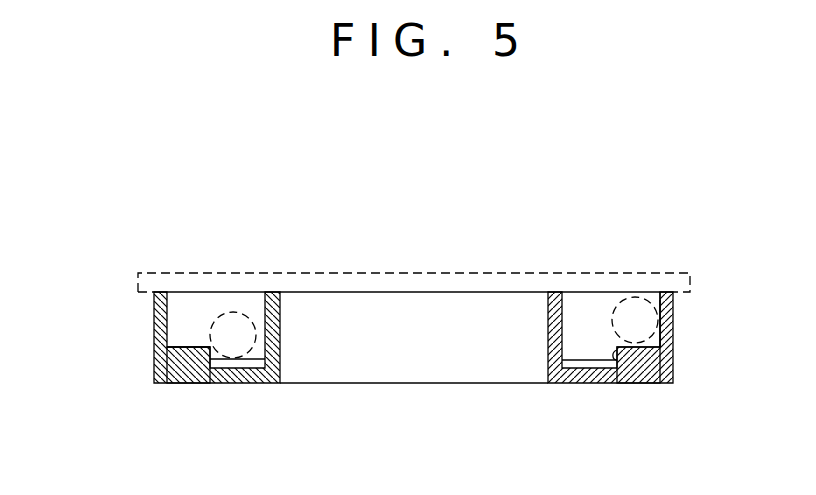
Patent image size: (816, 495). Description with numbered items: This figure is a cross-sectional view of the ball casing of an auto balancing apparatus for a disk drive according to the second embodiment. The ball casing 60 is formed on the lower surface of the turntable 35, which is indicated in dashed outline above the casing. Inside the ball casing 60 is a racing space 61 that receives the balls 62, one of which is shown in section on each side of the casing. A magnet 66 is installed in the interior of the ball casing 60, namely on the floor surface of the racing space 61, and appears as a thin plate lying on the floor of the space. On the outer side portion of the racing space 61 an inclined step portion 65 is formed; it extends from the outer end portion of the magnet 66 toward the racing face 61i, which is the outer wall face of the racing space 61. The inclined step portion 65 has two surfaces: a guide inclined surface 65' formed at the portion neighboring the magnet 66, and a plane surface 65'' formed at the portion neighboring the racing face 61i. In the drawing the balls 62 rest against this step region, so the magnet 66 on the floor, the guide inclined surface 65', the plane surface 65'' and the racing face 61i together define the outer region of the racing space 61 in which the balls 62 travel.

The turntable 35 is at (150, 283).
The ball casing 60 is at (673, 298).
The racing space 61 is at (578, 300).
The racing face 61i is at (660, 308).
The balls 62 is at (245, 313).
The inclined step portion 65 is at (691, 380).
The guide inclined surface 65' is at (424, 328).
The plane surface 65'' is at (455, 291).
The magnet 66 is at (584, 368).